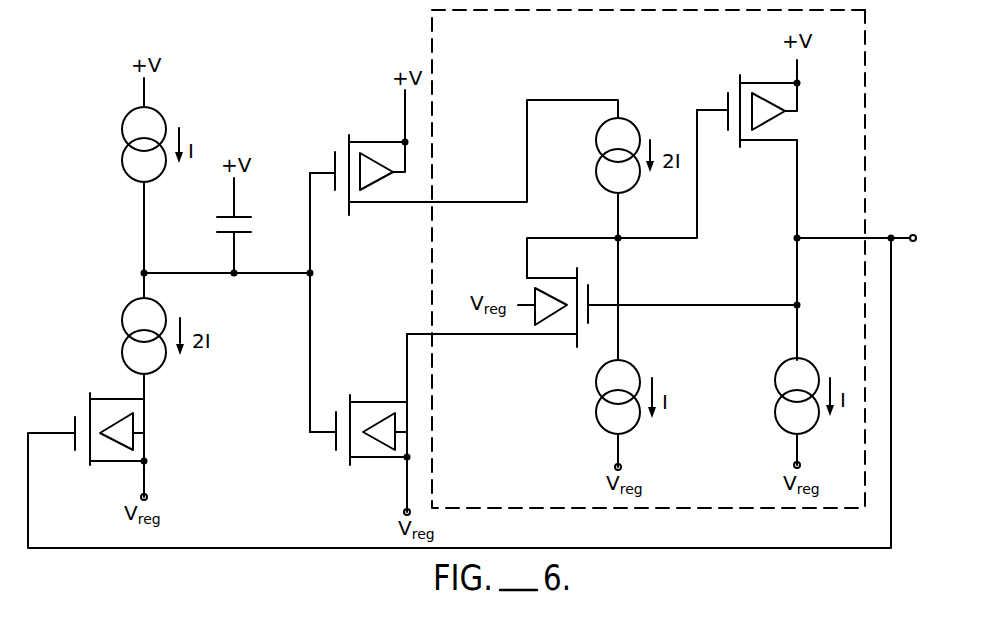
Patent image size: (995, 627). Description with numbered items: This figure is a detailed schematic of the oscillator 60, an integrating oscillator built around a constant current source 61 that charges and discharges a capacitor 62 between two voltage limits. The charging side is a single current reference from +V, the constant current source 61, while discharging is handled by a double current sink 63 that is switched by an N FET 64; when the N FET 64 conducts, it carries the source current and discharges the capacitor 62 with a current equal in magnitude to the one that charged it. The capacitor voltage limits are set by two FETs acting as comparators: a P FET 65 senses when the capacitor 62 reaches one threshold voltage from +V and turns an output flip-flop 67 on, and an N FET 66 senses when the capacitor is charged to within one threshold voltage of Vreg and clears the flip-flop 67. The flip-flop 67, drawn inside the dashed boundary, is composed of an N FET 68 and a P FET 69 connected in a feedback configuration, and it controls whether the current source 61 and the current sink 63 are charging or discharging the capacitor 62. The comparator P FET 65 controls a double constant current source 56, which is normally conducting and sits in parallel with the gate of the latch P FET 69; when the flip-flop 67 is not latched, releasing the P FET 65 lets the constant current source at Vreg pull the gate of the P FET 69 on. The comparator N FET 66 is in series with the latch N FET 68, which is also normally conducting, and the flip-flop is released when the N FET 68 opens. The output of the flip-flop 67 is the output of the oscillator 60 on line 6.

The constant current source 61 is at (170, 119).
The capacitor 62 is at (253, 211).
The double current sink 63 is at (172, 311).
The N FET 64 is at (107, 391).
The P FET 65 is at (344, 133).
The N FET 66 is at (412, 420).
The double constant current source 56 is at (634, 116).
The N FET 68 is at (583, 282).
The P FET 69 is at (794, 120).
The oscillator 60 is at (885, 42).
The flip-flop 67 is at (866, 87).
The line 6 is at (903, 237).